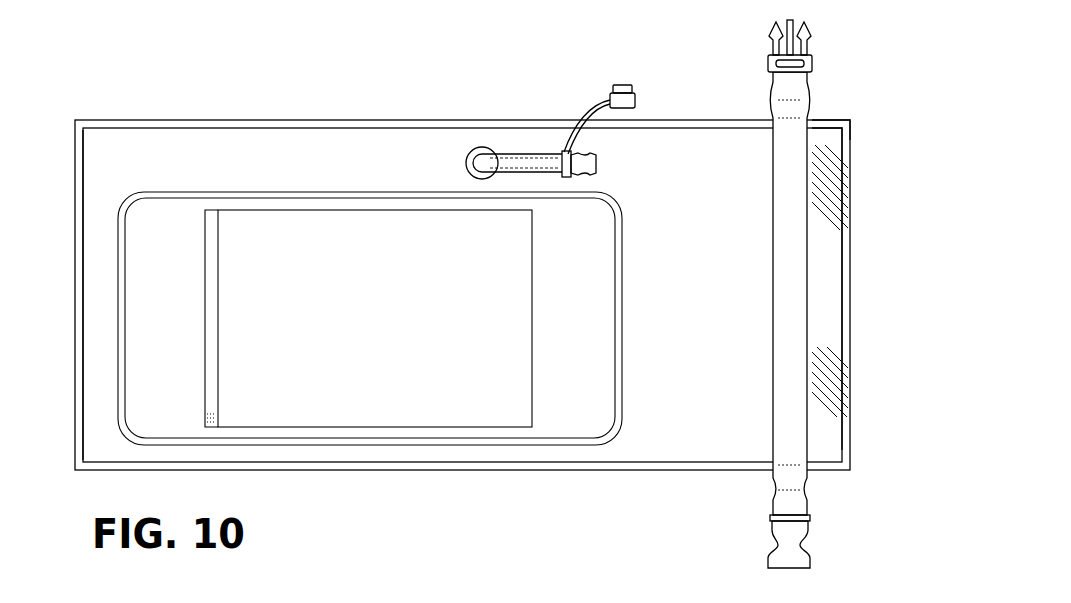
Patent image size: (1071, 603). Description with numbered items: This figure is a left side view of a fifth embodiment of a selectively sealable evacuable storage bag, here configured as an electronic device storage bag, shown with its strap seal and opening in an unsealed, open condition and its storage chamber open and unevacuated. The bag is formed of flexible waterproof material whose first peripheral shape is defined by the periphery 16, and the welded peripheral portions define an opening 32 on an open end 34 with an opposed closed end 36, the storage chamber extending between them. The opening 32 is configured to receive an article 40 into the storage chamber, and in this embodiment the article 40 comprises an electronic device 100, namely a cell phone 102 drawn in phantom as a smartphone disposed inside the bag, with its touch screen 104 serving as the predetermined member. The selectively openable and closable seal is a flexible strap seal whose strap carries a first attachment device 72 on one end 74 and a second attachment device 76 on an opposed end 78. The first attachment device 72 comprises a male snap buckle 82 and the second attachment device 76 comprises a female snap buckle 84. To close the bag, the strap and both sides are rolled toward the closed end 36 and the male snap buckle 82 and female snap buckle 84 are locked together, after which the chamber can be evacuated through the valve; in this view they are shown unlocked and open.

The periphery 16 is at (229, 119).
The opening 32 is at (850, 282).
The open end 34 is at (852, 117).
The closed end 36 is at (75, 255).
The article 40 is at (370, 250).
The electronic device 100 is at (413, 190).
The cell phone 102 is at (300, 192).
The touch screen 104 is at (358, 398).
The first attachment device 72 is at (838, 27).
The male snap buckle 82 is at (807, 25).
The one end 74 is at (808, 90).
The opposed end 78 is at (808, 500).
The second attachment device 76 is at (849, 553).
The female snap buckle 84 is at (810, 560).